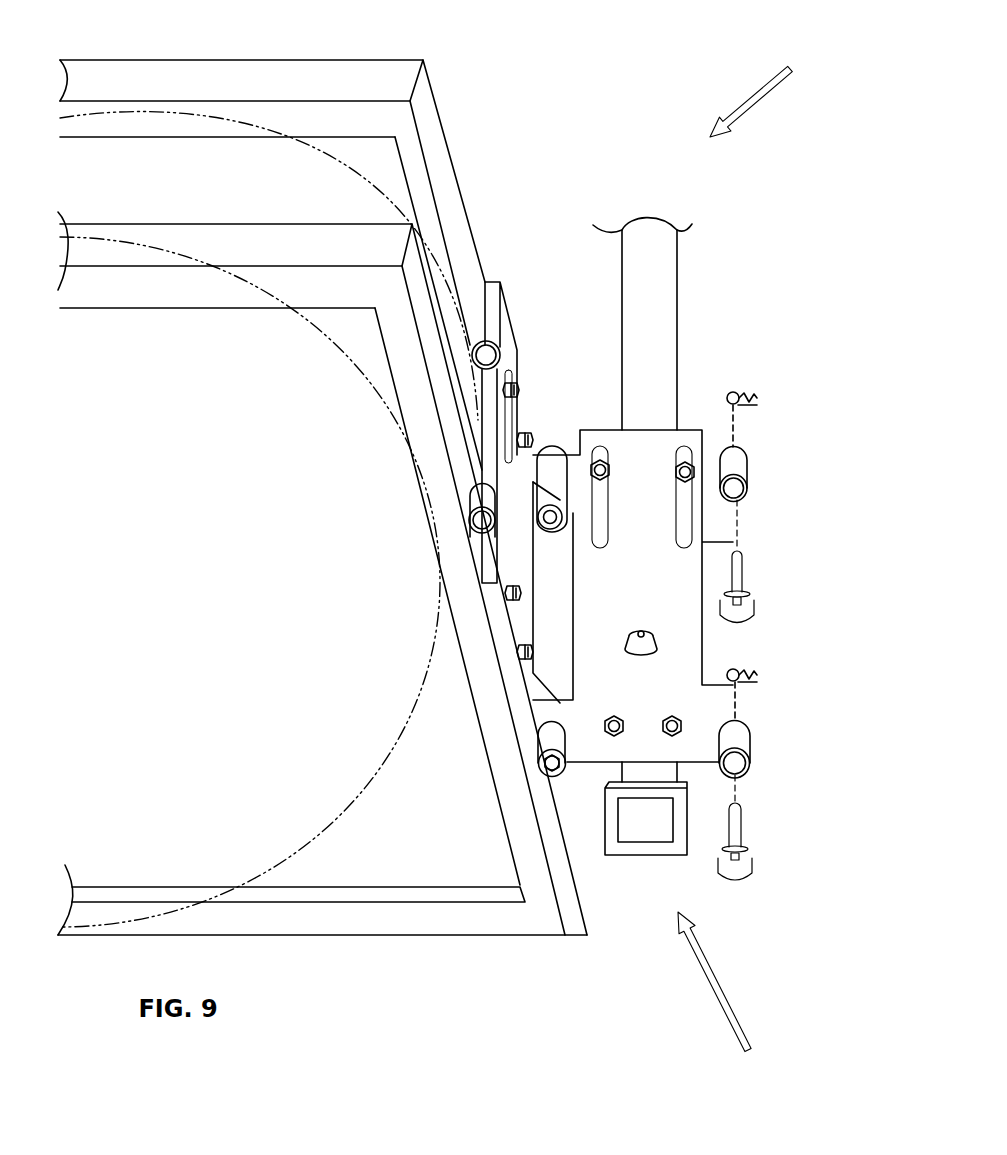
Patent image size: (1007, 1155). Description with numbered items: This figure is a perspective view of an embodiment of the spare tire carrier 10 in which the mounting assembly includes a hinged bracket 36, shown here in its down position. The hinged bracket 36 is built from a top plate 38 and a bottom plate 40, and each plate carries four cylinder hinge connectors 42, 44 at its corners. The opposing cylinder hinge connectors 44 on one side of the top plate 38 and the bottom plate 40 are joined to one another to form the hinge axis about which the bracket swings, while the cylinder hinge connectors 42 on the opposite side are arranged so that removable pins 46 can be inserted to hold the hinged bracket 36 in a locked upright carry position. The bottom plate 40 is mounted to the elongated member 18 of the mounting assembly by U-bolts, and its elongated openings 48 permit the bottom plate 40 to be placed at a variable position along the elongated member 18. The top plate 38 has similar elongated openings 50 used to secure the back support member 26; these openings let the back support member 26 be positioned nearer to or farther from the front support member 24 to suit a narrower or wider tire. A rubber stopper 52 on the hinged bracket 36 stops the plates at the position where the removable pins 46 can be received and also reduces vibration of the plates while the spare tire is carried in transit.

The spare tire carrier 10 is at (772, 92).
The elongated member 18 is at (648, 372).
The front support member 24 is at (382, 935).
The back support member 26 is at (403, 80).
The hinged bracket 36 is at (728, 1000).
The top plate 38 is at (517, 547).
The bottom plate 40 is at (650, 460).
The cylinder hinge connector 42 is at (748, 463).
The cylinder hinge connector 44 is at (537, 447).
The removable pin 46 is at (745, 603).
The elongated opening 48 is at (600, 446).
The elongated opening 50 is at (515, 350).
The rubber stopper 52 is at (630, 634).